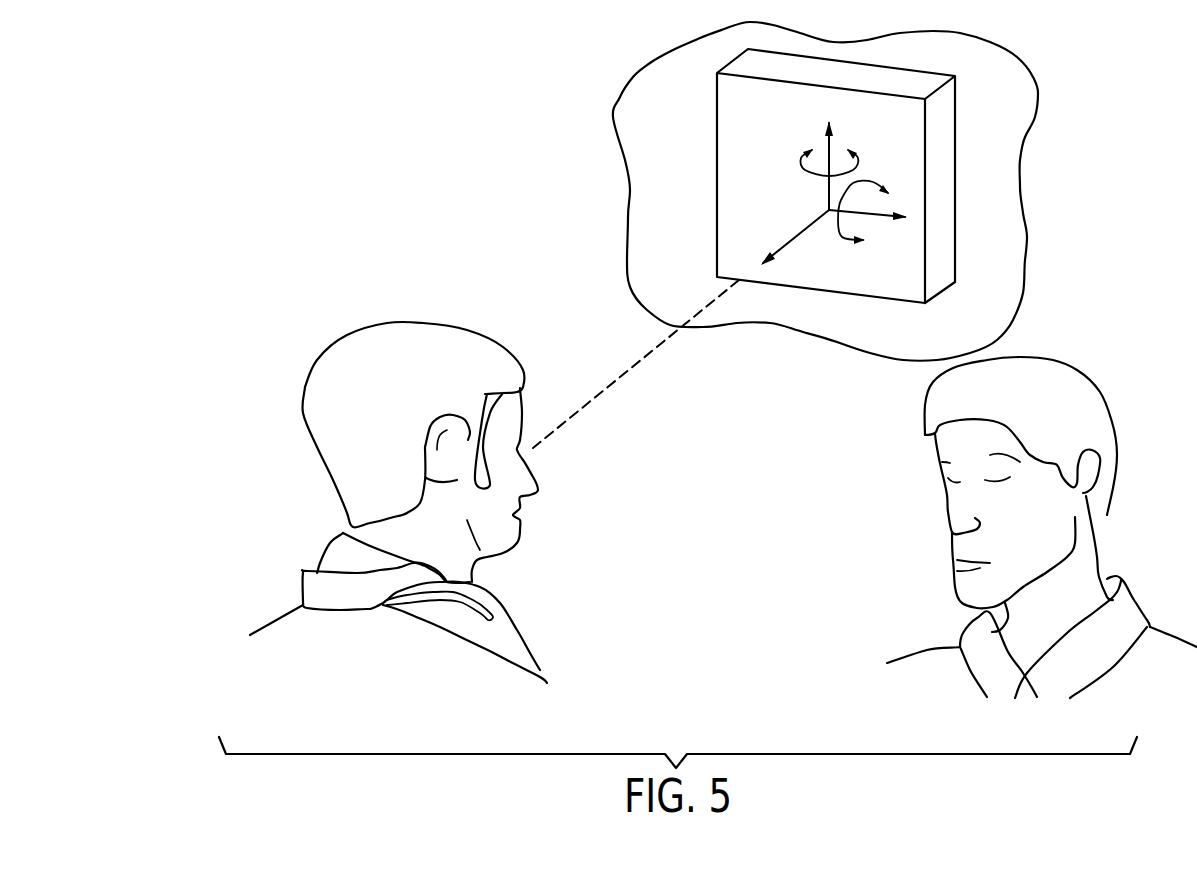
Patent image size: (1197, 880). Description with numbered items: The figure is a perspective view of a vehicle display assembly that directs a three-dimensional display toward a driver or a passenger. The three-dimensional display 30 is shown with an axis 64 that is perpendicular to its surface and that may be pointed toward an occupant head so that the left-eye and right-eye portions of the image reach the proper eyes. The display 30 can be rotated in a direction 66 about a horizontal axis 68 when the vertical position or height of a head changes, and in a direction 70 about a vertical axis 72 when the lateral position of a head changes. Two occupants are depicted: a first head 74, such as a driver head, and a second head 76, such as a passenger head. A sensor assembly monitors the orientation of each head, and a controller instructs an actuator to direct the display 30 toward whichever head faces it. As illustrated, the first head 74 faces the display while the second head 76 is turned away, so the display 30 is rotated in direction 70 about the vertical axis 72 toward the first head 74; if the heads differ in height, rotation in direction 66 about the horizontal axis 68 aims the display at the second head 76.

The 3D display 30 is at (945, 157).
The axis 64 is at (797, 228).
The direction 66 is at (872, 178).
The horizontal axis 68 is at (873, 222).
The direction 70 is at (810, 175).
The vertical axis 72 is at (828, 141).
The first head 74 is at (323, 375).
The second head 76 is at (1070, 400).